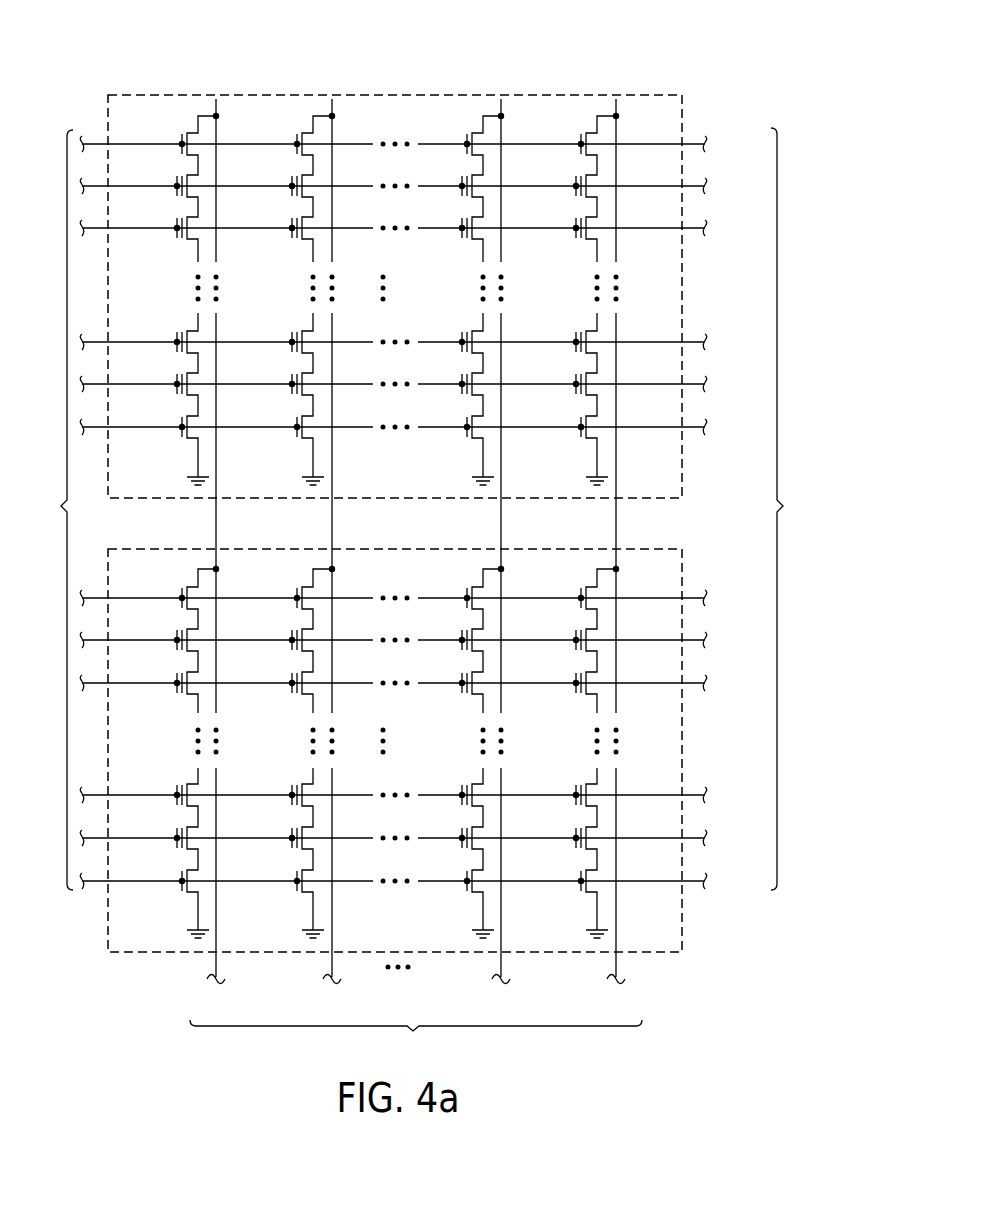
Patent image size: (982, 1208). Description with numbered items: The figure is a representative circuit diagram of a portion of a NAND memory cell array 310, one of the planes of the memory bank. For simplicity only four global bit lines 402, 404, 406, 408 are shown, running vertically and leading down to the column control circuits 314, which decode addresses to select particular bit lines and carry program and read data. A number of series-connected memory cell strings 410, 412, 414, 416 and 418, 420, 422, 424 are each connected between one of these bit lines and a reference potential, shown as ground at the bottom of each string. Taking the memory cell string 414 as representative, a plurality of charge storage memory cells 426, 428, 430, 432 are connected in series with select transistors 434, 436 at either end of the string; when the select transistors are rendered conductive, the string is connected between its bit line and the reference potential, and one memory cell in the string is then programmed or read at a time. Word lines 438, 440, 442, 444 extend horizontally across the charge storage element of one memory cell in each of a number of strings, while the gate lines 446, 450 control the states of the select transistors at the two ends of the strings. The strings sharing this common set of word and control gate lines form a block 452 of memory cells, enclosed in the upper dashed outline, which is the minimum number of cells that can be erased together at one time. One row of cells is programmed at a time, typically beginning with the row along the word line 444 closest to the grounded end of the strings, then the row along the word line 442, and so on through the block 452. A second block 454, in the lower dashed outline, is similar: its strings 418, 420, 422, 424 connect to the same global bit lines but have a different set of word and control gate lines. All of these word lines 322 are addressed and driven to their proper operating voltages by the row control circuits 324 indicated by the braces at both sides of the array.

The memory cell array 310 is at (133, 49).
The block 452 is at (377, 74).
The second block 454 is at (473, 969).
The global bit line 402 is at (219, 132).
The global bit line 404 is at (335, 132).
The global bit line 406 is at (504, 132).
The global bit line 408 is at (617, 132).
The memory cell string 410 is at (177, 310).
The memory cell string 412 is at (292, 310).
The memory cell string 414 is at (462, 310).
The memory cell string 416 is at (576, 310).
The memory cell string 418 is at (177, 763).
The memory cell string 420 is at (292, 763).
The memory cell string 422 is at (462, 763).
The memory cell string 424 is at (576, 763).
The charge storage memory cell 426 is at (463, 174).
The charge storage memory cell 428 is at (463, 216).
The charge storage memory cell 430 is at (463, 331).
The charge storage memory cell 432 is at (463, 373).
The select transistor 434 is at (466, 416).
The select transistor 436 is at (472, 133).
The word line 438 is at (690, 185).
The word line 440 is at (690, 227).
The word line 442 is at (690, 341).
The word line 444 is at (690, 383).
The control gate line 446 is at (690, 143).
The control gate line 450 is at (690, 426).
The word lines 322 is at (395, 502).
The row control circuits 324 is at (434, 509).
The column control circuits 314 is at (416, 1041).